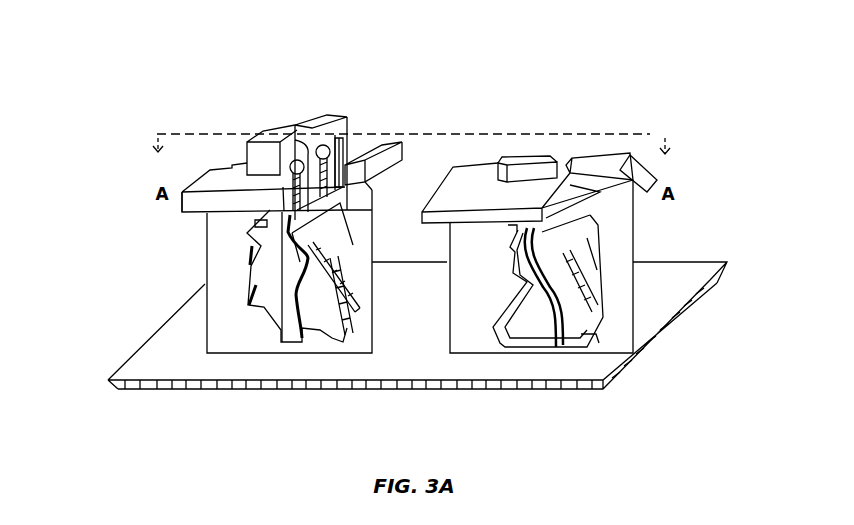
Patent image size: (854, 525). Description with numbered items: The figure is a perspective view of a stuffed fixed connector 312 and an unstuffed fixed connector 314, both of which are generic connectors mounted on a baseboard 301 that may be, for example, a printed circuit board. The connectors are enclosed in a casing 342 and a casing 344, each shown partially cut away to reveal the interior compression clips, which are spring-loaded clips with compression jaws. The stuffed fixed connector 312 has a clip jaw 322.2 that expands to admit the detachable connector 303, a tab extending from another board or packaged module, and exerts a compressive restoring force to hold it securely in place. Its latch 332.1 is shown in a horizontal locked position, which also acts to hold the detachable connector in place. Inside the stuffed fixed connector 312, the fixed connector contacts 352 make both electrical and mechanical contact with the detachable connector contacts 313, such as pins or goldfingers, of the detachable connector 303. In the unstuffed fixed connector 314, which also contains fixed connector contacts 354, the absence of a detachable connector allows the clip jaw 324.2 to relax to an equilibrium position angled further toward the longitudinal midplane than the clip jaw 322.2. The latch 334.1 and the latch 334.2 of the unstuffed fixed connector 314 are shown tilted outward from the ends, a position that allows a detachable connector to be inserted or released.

The baseboard 301 is at (383, 375).
The detachable connector 303 is at (320, 120).
The stuffed fixed connector 312 is at (200, 168).
The detachable connector contacts 313 is at (320, 122).
The unstuffed fixed connector 314 is at (647, 150).
The clip jaw 322.2 is at (293, 285).
The clip jaw 324.2 is at (550, 307).
The latch 332.1 is at (182, 203).
The latch 334.1 is at (453, 165).
The latch 334.2 is at (525, 152).
The casing 342 is at (207, 255).
The casing 344 is at (635, 258).
The fixed connector contacts 352 is at (290, 330).
The fixed connector contacts 354 is at (575, 262).